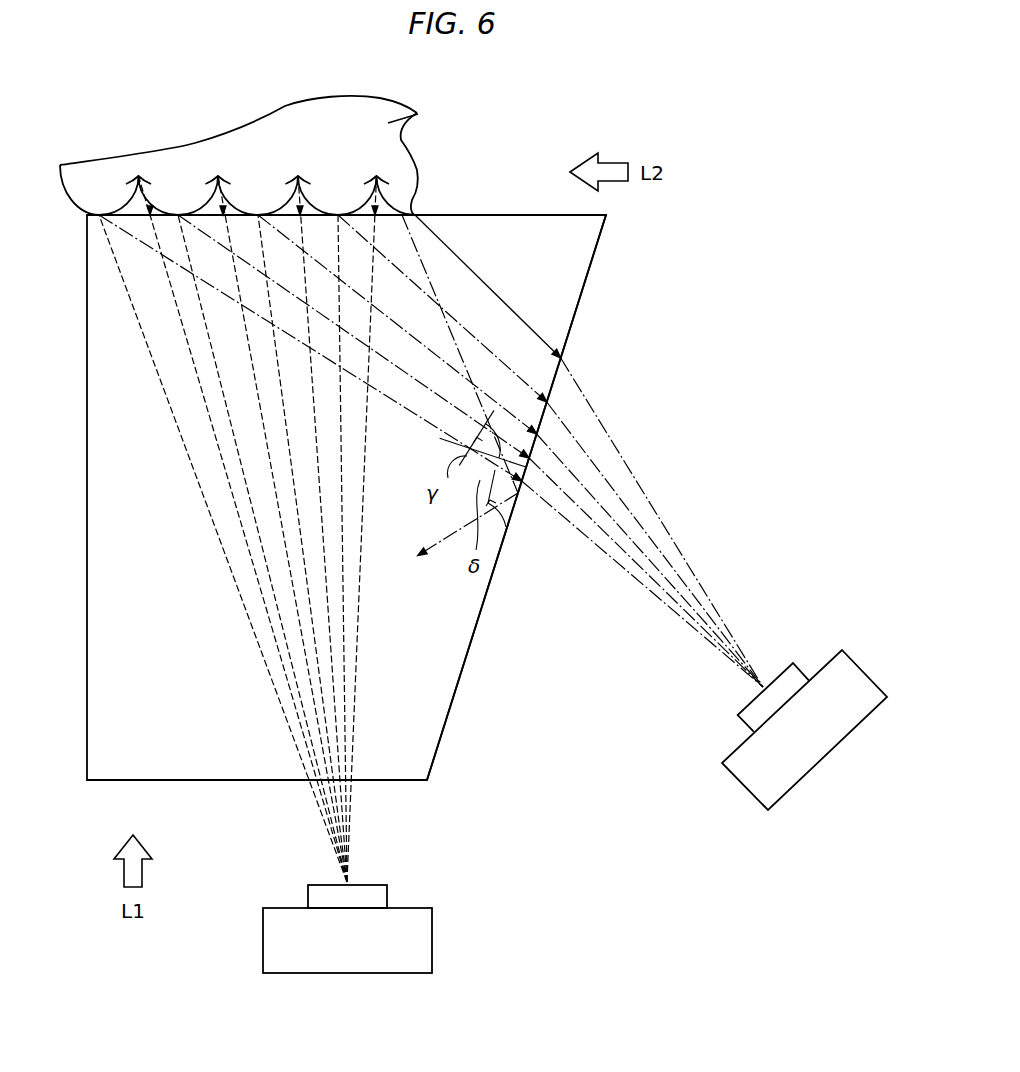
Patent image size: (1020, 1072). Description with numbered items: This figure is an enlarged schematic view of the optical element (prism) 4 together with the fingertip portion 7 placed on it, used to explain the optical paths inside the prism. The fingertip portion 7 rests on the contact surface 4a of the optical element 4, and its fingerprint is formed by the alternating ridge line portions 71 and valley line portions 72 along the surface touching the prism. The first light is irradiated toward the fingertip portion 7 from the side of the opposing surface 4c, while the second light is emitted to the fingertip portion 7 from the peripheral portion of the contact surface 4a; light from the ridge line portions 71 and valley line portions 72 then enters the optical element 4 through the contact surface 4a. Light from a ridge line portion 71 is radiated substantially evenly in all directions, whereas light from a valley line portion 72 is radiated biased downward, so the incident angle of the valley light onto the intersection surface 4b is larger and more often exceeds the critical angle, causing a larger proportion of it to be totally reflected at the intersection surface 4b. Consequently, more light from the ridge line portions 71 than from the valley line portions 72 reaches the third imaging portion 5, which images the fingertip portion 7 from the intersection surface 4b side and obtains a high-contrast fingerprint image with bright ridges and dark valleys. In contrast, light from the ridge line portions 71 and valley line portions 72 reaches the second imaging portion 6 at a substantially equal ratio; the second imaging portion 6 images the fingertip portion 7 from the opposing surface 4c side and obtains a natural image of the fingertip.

The optical element (prism) 4 is at (578, 253).
The contact surface 4a is at (484, 215).
The intersection surface 4b is at (577, 307).
The opposing surface 4c is at (203, 780).
The third imaging portion 5 is at (838, 648).
The second imaging portion 6 is at (422, 935).
The fingertip portion 7 is at (418, 114).
The ridge line portion 71 is at (99, 205).
The valley line portion 72 is at (374, 167).